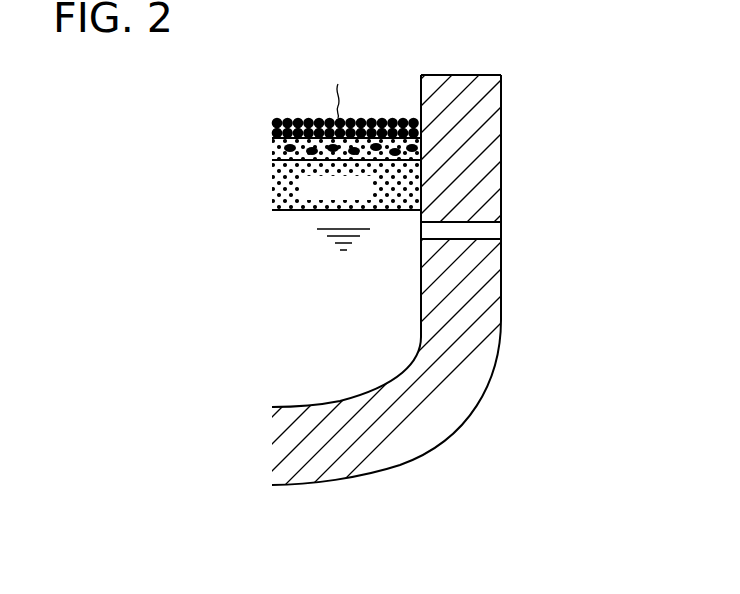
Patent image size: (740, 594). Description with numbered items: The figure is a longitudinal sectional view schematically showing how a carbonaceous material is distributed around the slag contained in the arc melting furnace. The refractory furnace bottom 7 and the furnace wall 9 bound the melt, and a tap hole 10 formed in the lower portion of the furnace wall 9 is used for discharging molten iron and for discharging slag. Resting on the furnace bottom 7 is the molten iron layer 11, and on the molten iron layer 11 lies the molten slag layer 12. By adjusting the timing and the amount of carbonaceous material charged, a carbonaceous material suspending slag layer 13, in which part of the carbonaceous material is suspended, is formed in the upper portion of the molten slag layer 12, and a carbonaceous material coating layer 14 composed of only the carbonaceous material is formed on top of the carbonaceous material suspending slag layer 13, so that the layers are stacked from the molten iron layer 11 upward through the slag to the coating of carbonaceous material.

The furnace bottom 7 is at (377, 482).
The furnace wall 9 is at (493, 138).
The tap hole 10 is at (493, 231).
The molten iron layer 11 is at (207, 212).
The molten slag layer 12 is at (207, 140).
The carbonaceous material suspending slag layer 13 is at (265, 140).
The carbonaceous material coating layer 14 is at (265, 117).